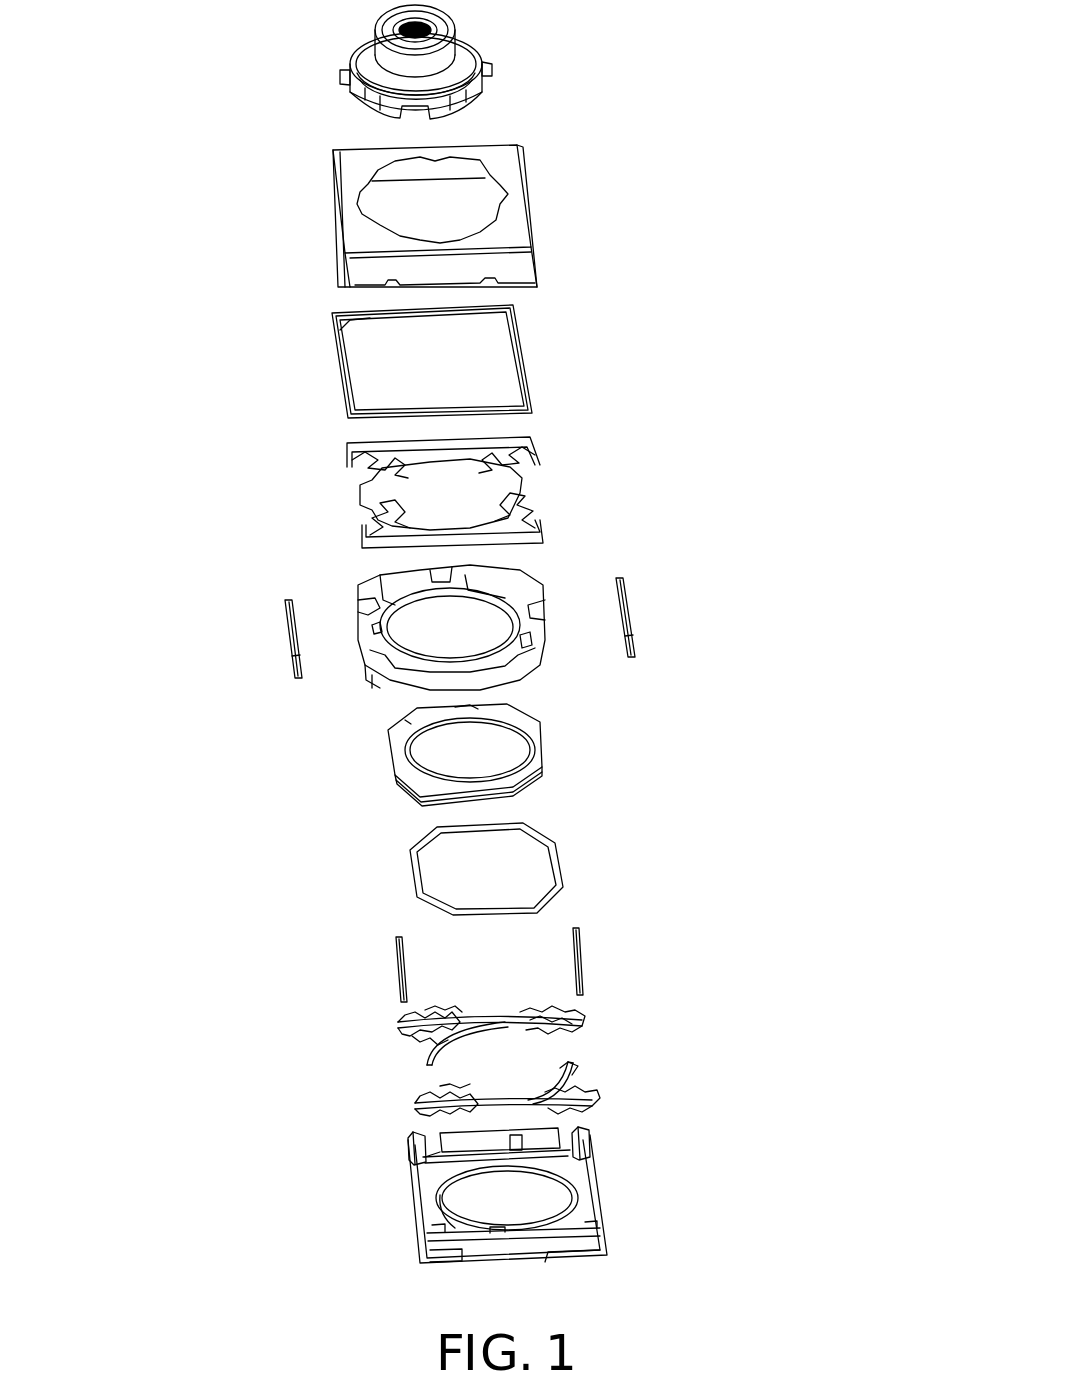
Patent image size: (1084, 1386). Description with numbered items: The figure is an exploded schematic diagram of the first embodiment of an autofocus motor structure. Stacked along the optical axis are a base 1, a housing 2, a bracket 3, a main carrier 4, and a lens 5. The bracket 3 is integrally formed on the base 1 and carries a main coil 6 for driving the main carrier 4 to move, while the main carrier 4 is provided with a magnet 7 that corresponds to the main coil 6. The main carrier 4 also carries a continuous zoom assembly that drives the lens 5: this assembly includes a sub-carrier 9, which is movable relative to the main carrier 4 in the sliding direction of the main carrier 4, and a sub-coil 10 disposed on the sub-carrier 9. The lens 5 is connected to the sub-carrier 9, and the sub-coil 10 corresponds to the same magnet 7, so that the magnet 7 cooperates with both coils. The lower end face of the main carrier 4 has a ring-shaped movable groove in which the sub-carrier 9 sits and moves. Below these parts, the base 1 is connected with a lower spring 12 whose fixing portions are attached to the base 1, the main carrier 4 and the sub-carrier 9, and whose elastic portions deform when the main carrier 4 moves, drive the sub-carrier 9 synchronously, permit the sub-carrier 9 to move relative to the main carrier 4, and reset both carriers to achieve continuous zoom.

The base 1 is at (580, 1177).
The housing 2 is at (503, 165).
The bracket 3 is at (592, 1147).
The main carrier 4 is at (523, 577).
The lens 5 is at (460, 62).
The main coil 6 is at (580, 963).
The magnet 7 is at (627, 617).
The sub-carrier 9 is at (537, 760).
The sub-coil 10 is at (557, 857).
The lower spring 12 is at (596, 1049).